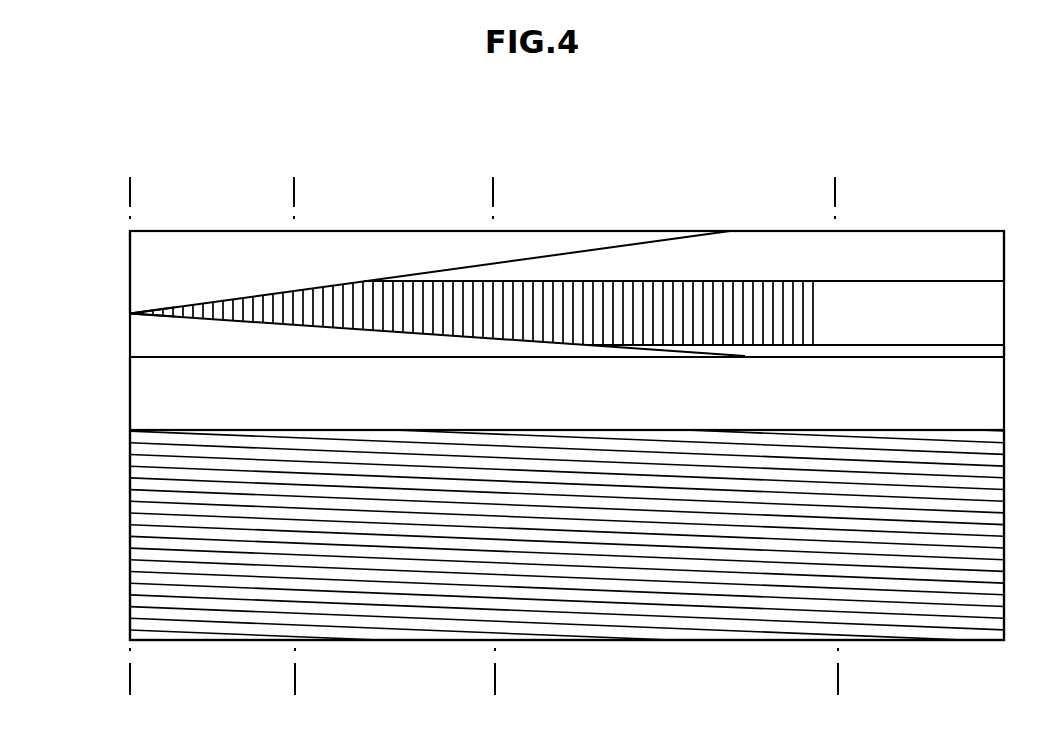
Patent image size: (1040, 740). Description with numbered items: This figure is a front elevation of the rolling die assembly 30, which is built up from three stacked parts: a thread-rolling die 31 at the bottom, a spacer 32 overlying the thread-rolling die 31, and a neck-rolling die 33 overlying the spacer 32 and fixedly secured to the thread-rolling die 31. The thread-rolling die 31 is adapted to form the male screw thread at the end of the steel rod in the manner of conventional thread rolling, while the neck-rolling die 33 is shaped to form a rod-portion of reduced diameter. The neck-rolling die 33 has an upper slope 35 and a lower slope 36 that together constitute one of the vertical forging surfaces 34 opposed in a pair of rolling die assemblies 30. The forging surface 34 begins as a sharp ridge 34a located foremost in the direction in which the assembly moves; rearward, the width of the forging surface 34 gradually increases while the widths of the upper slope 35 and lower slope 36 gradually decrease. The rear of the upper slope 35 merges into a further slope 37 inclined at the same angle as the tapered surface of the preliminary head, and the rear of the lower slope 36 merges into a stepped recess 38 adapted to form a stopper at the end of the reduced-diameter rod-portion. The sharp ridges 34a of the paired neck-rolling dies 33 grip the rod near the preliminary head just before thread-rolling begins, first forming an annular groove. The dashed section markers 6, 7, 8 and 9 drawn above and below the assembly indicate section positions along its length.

The rolling die assembly 30 is at (438, 208).
The thread-rolling die 31 is at (142, 553).
The spacer 32 is at (137, 393).
The neck-rolling die 33 is at (130, 255).
The vertical forging surface 34 is at (607, 290).
The sharp ridge 34a is at (130, 313).
The upper slope 35 is at (337, 241).
The lower slope 36 is at (325, 343).
The further slope 37 is at (860, 245).
The stepped recess 38 is at (883, 350).
The section line 6- 6 is at (130, 436).
The section line 7- 7 is at (294, 436).
The section line 8- 8 is at (494, 436).
The section line 9- 9 is at (836, 436).